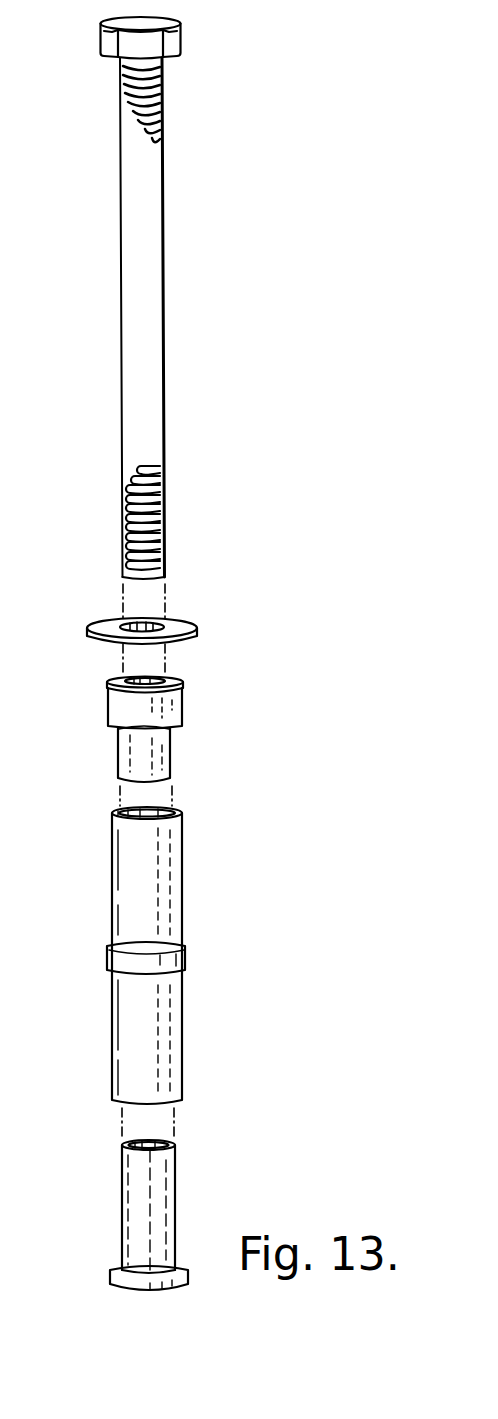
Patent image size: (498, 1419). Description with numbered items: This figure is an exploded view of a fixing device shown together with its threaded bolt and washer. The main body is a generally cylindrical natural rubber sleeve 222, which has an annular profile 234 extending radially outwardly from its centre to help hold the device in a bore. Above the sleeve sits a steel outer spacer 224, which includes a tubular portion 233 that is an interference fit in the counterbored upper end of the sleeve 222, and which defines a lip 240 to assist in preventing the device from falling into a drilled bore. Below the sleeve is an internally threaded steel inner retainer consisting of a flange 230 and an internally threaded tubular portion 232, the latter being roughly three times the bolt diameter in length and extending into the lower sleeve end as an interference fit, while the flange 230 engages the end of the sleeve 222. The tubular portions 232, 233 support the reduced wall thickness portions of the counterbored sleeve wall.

The sleeve 222 is at (137, 1017).
The outer spacer 224 is at (170, 708).
The flange 230 is at (112, 1275).
The tubular portion 232 is at (158, 1188).
The tubular portion 233 is at (133, 758).
The annular profile 234 is at (183, 960).
The lip 240 is at (110, 683).